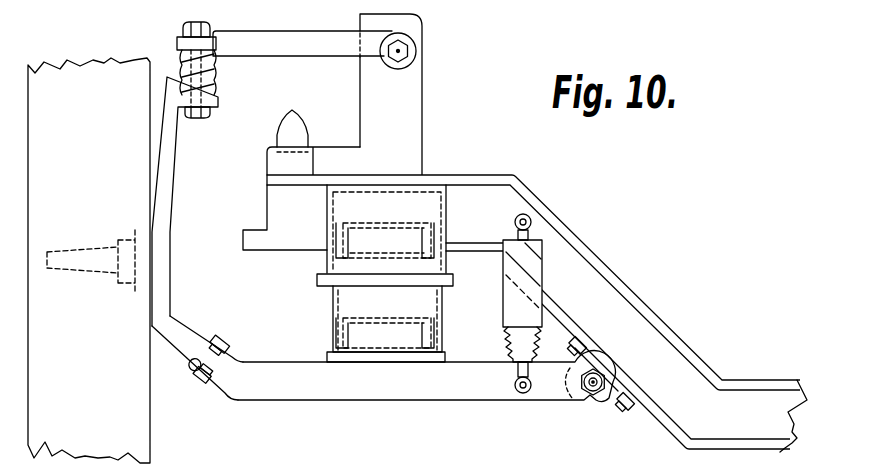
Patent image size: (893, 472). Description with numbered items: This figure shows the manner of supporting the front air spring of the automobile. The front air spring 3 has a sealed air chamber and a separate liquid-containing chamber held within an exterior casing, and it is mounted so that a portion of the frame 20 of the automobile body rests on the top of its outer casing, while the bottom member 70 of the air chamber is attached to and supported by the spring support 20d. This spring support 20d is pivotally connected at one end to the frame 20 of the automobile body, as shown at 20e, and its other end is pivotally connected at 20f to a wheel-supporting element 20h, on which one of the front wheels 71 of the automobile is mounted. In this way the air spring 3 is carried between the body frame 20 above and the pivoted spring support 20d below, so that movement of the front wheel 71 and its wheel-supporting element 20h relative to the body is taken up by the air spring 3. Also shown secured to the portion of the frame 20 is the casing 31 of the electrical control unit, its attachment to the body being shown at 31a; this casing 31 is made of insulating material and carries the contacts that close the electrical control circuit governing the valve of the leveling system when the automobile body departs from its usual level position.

The front wheel 71 is at (90, 178).
The frame of the automobile body 20 is at (310, 205).
The spring support 20d is at (475, 381).
The pivotal connection 20e is at (592, 394).
The pivotal connection 20f is at (208, 387).
The wheel-supporting element 20h is at (160, 292).
The front air spring 3 is at (314, 264).
The bottom member of the air chamber 70 is at (345, 357).
The casing 31 is at (533, 262).
The securing point of casing 31a is at (527, 217).